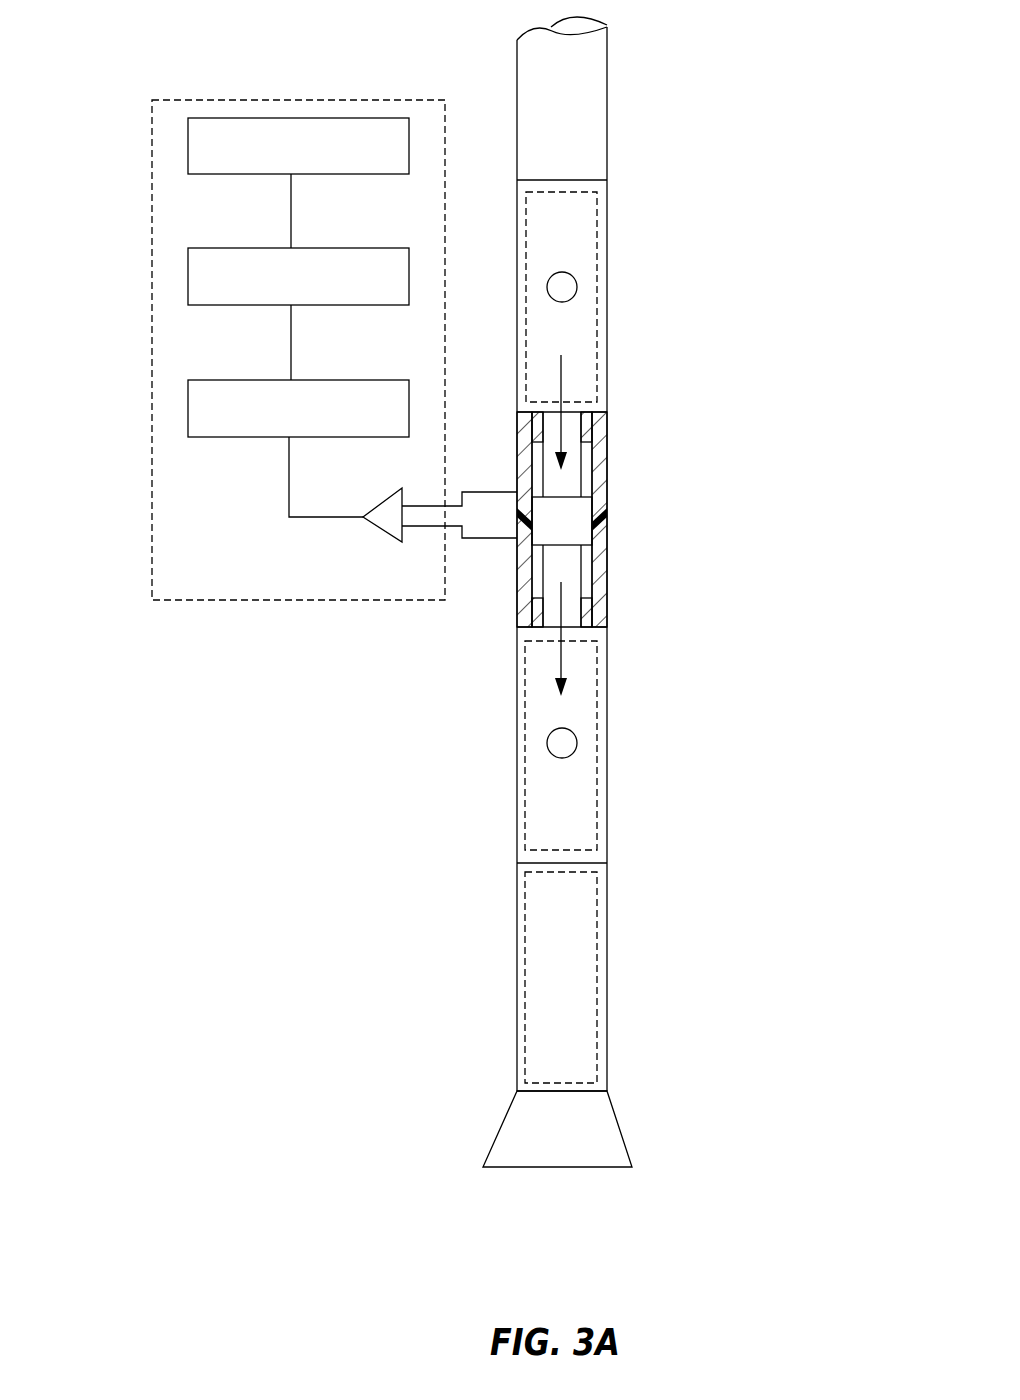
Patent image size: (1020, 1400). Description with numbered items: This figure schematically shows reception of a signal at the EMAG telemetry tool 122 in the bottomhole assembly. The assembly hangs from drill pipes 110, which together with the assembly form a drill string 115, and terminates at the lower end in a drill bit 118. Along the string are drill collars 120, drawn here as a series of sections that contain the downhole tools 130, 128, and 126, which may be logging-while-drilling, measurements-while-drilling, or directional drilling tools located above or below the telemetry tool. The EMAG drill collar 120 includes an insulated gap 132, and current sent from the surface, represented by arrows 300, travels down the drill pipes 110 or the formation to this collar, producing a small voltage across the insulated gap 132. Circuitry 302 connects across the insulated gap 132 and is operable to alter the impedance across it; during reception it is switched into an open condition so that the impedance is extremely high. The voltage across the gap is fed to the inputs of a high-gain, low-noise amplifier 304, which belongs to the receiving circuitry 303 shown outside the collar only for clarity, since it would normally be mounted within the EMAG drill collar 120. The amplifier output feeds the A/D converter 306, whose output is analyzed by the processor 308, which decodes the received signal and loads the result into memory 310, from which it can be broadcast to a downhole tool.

The drill pipes 110 is at (597, 112).
The drill string 115 is at (616, 46).
The drill bit 118 is at (605, 1138).
The drill collar 120 is at (605, 597).
The EMAG telemetry tool 122 is at (598, 466).
The downhole tool 126 is at (540, 978).
The downhole tool 128 is at (538, 815).
The downhole tool 130 is at (583, 230).
The insulated gap 132 is at (602, 515).
The arrows 300 is at (576, 385).
The circuitry 302 is at (569, 533).
The circuitry 303 is at (364, 90).
The high-gain, low-noise amplifier 304 is at (392, 522).
The A/D converter 306 is at (188, 403).
The processor 308 is at (188, 277).
The memory 310 is at (228, 118).